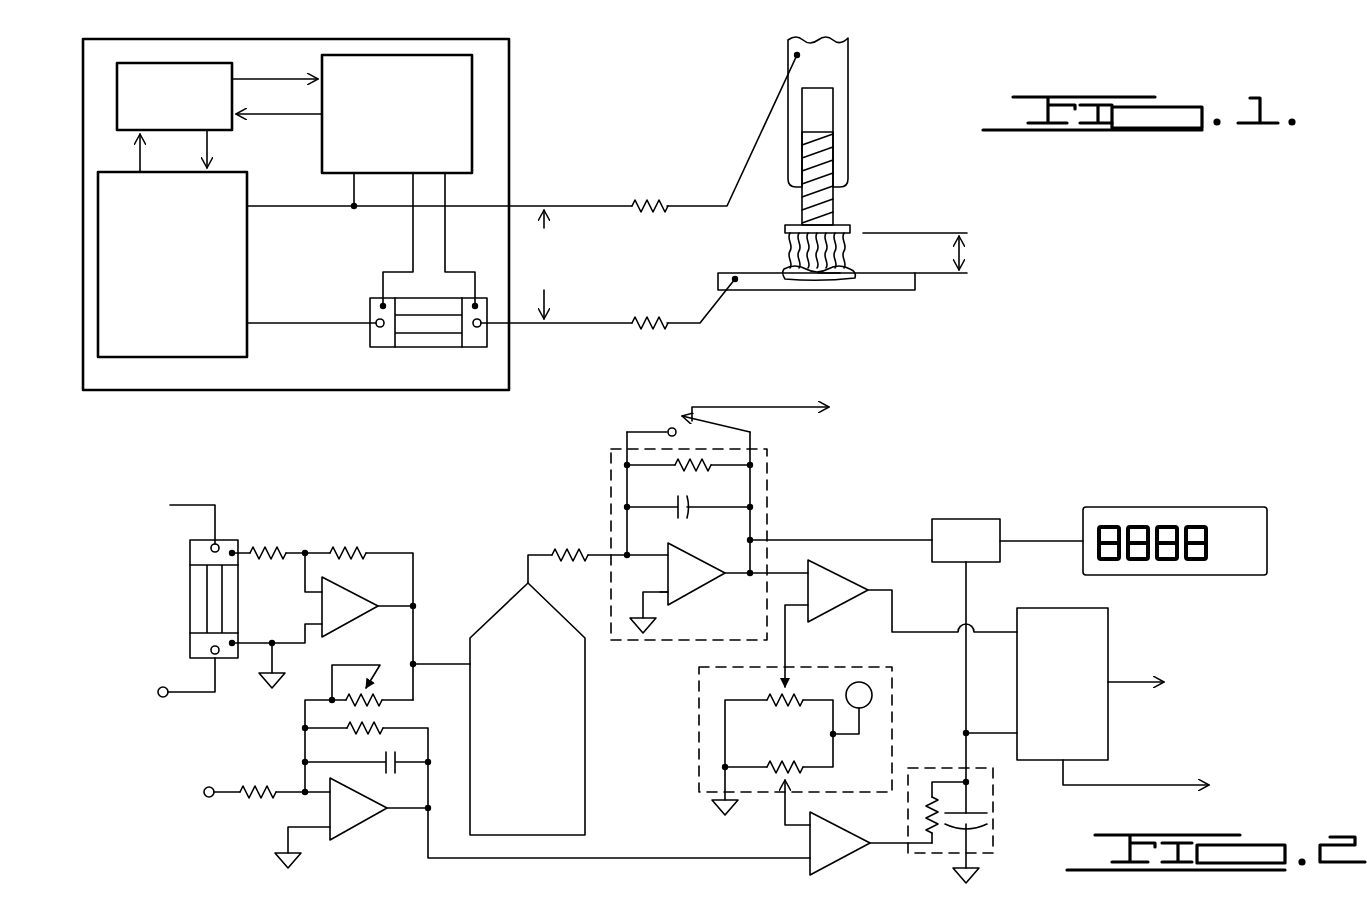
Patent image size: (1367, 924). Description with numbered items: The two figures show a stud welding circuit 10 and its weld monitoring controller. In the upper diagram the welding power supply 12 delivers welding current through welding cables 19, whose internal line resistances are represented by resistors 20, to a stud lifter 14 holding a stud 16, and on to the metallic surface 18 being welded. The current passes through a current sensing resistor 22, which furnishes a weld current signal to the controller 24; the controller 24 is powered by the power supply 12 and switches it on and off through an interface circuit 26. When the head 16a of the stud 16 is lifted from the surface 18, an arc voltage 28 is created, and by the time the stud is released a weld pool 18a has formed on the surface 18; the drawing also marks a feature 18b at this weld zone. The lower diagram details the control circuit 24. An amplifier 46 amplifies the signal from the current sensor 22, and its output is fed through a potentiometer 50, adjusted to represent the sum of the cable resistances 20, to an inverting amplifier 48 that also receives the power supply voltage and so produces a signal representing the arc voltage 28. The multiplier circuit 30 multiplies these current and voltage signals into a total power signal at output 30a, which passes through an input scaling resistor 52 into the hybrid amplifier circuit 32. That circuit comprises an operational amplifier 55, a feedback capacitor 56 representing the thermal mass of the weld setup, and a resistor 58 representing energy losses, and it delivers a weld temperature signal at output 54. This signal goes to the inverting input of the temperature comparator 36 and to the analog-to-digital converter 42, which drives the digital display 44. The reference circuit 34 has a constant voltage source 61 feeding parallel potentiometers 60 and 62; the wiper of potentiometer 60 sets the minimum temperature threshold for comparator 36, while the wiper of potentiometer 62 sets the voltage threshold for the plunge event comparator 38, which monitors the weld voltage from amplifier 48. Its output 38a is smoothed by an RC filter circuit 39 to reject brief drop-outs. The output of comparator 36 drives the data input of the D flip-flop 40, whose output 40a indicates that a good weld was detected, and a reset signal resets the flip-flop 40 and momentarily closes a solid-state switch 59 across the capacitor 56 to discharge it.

In FIG. 1, the stud welding circuit 10 is at (557, 97).
In FIG. 1, the welding power supply 12 is at (172, 264).
In FIG. 1, the stud lifter 14 is at (850, 58).
In FIG. 1, the stud 16 is at (837, 197).
In FIG. 1, the stud head 16a is at (850, 230).
In FIG. 1, the metallic surface 18 is at (905, 293).
In FIG. 1, the weld pool 18a is at (825, 278).
In FIG. 1, the weld pool 18b is at (765, 268).
In FIG. 1, the welding cables 19 is at (565, 205).
In FIG. 1, the line resistance resistors 20 is at (651, 205).
In FIG. 1, the current sensing resistor 22 is at (377, 349).
In FIG. 2, the current sensing resistor 22 is at (188, 559).
In FIG. 1, the control circuit 24 is at (397, 114).
In FIG. 2, the control circuit 24 is at (442, 552).
In FIG. 1, the interface circuit 26 is at (232, 118).
In FIG. 1, the arc voltage 28 is at (783, 239).
In FIG. 2, the multiplier circuit 30 is at (523, 695).
In FIG. 2, the multiplier output 30a is at (524, 583).
In FIG. 2, the amplifier circuit 32 is at (768, 558).
In FIG. 2, the reference circuit 34 is at (786, 741).
In FIG. 2, the temperature comparator 36 is at (835, 598).
In FIG. 2, the plunge event comparator 38 is at (808, 838).
In FIG. 2, the comparator output 38a is at (862, 848).
In FIG. 2, the RC filter circuit 39 is at (993, 800).
In FIG. 2, the D flip-flop 40 is at (1087, 696).
In FIG. 2, the latch Q output 40a is at (1110, 682).
In FIG. 2, the analog-to-digital converter 42 is at (1000, 527).
In FIG. 2, the digital display 44 is at (1270, 548).
In FIG. 2, the amplifier 46 is at (356, 603).
In FIG. 2, the inverting amplifier circuit 48 is at (360, 815).
In FIG. 2, the potentiometer 50 is at (368, 690).
In FIG. 2, the input scaling resistor 52 is at (563, 553).
In FIG. 2, the amplifier circuit output 54 is at (750, 565).
In FIG. 2, the operational amplifier 55 is at (688, 598).
In FIG. 2, the feedback capacitor 56 is at (678, 496).
In FIG. 2, the resistor 58 is at (702, 470).
In FIG. 2, the solid-state switch 59 is at (702, 424).
In FIG. 2, the potentiometer 60 is at (775, 706).
In FIG. 2, the constant voltage source 61 is at (873, 697).
In FIG. 2, the potentiometer 62 is at (776, 765).